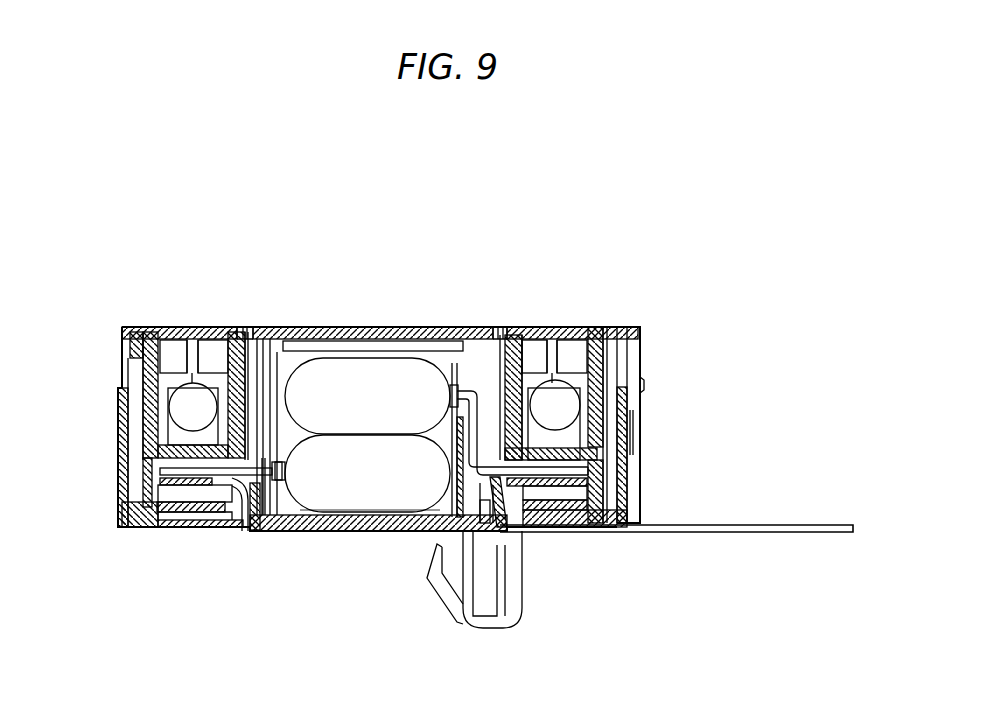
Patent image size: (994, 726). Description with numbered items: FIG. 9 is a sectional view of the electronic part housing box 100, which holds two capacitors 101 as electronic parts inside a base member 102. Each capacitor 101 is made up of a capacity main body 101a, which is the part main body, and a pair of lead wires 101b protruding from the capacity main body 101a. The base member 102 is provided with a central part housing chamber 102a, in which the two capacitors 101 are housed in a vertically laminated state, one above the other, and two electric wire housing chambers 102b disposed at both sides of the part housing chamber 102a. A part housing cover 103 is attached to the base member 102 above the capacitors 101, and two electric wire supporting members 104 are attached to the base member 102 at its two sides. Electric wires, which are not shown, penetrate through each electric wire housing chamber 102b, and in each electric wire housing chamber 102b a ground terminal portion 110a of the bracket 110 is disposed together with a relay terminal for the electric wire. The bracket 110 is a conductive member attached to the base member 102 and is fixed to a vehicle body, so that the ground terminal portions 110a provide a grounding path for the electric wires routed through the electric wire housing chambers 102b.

The electronic part housing box 100 is at (508, 228).
The capacitor 101 is at (331, 356).
The capacity main body 101a is at (360, 397).
The lead wire 101b is at (190, 466).
The base member 102 is at (622, 404).
The part housing chamber 102a is at (265, 327).
The electric wire housing chamber 102b is at (237, 327).
The part housing cover 103 is at (433, 327).
The electric wire supporting member 104 is at (168, 327).
The bracket 110 is at (413, 535).
The ground terminal portion 110a is at (172, 490).